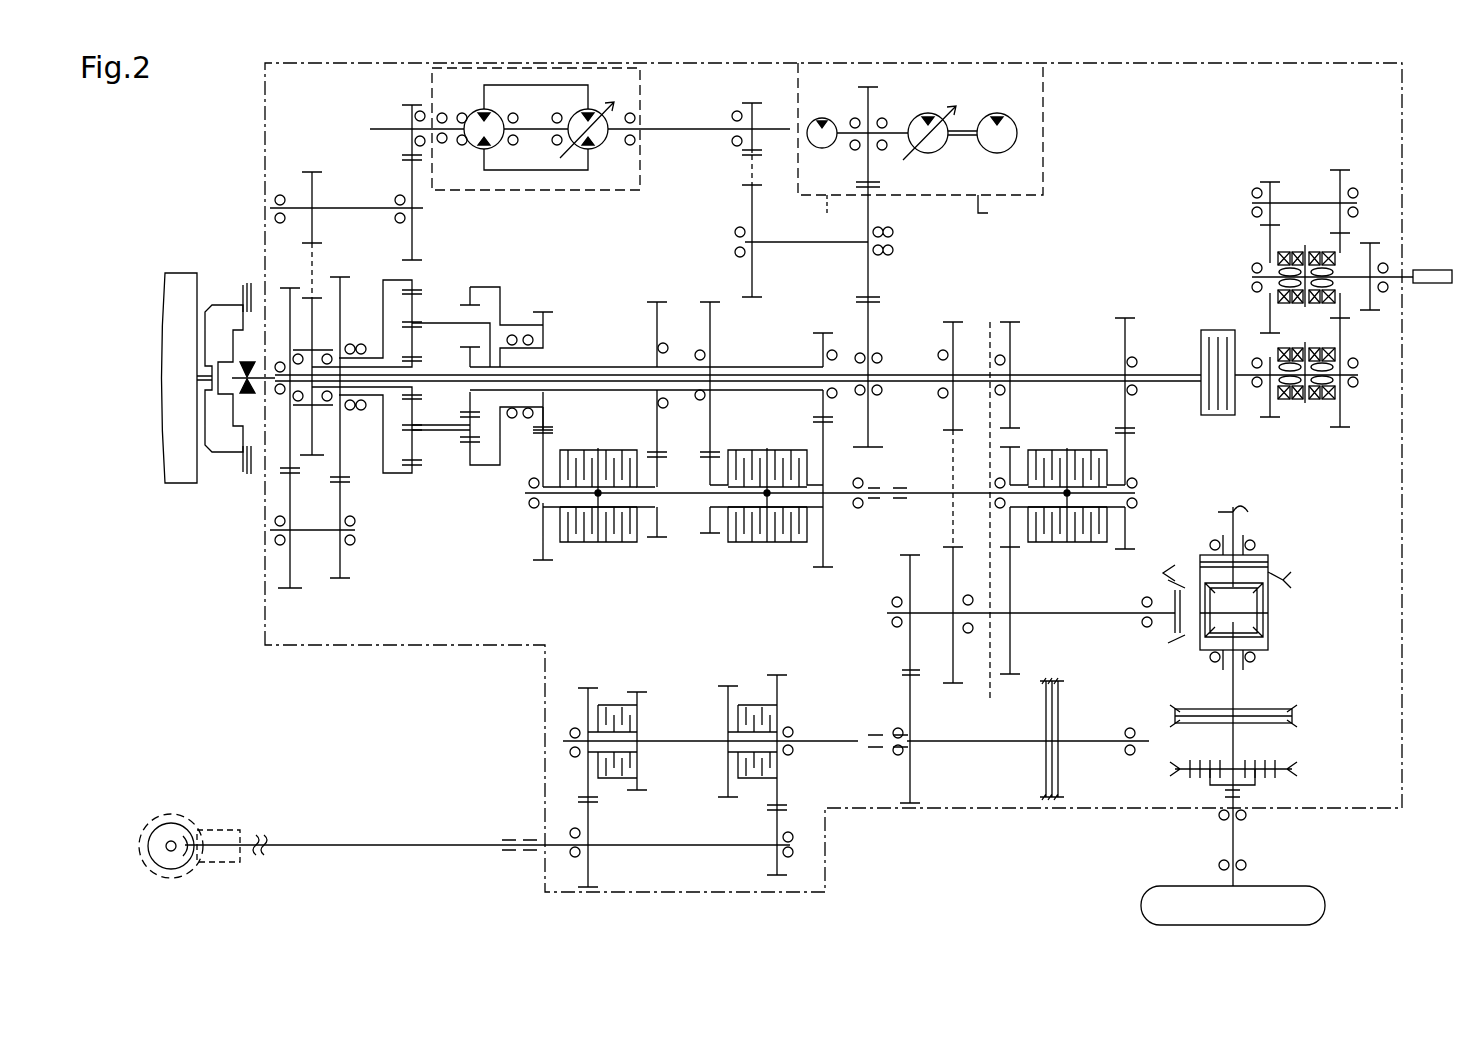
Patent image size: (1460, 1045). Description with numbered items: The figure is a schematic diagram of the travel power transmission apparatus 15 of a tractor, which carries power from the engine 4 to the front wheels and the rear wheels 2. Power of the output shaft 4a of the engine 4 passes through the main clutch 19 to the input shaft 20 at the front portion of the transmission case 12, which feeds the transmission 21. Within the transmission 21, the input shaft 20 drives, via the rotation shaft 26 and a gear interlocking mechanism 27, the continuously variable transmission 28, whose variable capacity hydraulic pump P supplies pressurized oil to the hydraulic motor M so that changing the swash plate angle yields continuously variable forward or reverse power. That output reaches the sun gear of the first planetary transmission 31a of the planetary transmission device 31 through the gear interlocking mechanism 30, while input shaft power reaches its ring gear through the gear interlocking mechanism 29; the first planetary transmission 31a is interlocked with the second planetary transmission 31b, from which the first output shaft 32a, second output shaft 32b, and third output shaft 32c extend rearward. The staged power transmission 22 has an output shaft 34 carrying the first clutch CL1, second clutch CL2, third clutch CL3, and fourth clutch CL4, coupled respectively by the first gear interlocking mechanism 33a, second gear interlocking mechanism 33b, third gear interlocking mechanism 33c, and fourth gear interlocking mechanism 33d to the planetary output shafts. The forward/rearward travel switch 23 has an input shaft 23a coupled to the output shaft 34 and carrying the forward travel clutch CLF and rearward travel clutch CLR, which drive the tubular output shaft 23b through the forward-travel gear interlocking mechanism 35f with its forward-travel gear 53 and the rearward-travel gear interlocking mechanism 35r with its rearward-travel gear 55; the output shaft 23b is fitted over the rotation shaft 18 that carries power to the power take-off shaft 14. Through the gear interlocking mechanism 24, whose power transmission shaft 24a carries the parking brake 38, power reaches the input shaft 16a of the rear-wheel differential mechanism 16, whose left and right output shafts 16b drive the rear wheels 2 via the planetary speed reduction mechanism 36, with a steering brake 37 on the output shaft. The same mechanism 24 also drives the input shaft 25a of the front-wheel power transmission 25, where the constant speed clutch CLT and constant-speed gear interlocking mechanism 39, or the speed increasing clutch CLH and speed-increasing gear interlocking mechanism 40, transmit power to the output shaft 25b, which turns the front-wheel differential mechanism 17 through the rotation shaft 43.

The rear wheels 2 is at (1325, 905).
The engine 4 is at (178, 483).
The output shaft 4a is at (197, 378).
The transmission case 12 is at (265, 78).
The power take-off shaft 14 is at (1432, 270).
The travel power transmission apparatus 15 is at (214, 180).
The rear-wheel differential mechanism 16 is at (1310, 600).
The input shaft 16a is at (1100, 613).
The output shafts 16b is at (1233, 708).
The front-wheel differential mechanism 17 is at (176, 822).
The rotation shaft 18 is at (1201, 360).
The main clutch 19 is at (225, 305).
The input shaft 20 is at (268, 372).
The transmission 21 is at (436, 573).
The staged power transmission 22 is at (707, 598).
The forward/rearward travel switch 23 is at (1100, 277).
The input shaft 23a is at (915, 493).
The output shaft 23b is at (980, 350).
The gear interlocking mechanism 24 is at (916, 329).
The power transmission shaft 24a is at (1000, 745).
The front-wheel power transmission 25 is at (672, 665).
The input shaft 25a is at (815, 741).
The output shaft 25b is at (700, 850).
The rotation shaft 26 is at (765, 365).
The gear interlocking mechanism 27 is at (799, 227).
The continuously variable transmission 28 is at (640, 80).
The gear interlocking mechanism 29 is at (275, 585).
The gear interlocking mechanism 30 is at (328, 140).
The planetary transmission device 31 is at (505, 256).
The first planetary transmission 31a is at (402, 496).
The second planetary transmission 31b is at (495, 487).
The first output shaft 32a is at (510, 350).
The second output shaft 32b is at (616, 362).
The third output shaft 32c is at (790, 385).
The first gear interlocking mechanism 33a is at (543, 560).
The second gear interlocking mechanism 33b is at (836, 538).
The third gear interlocking mechanism 33c is at (720, 335).
The fourth gear interlocking mechanism 33d is at (709, 555).
The output shaft 34 is at (855, 522).
The rearward-travel gear interlocking mechanism 35r is at (1035, 290).
The forward-travel gear interlocking mechanism 35f is at (1150, 298).
The planetary speed reduction mechanism 36 is at (1292, 768).
The steering brake 37 is at (1292, 710).
The parking brake 38 is at (1058, 750).
The constant-speed gear interlocking mechanism 39 is at (548, 795).
The speed-increasing gear interlocking mechanism 40 is at (835, 806).
The rotation shaft 43 is at (355, 845).
The forward-travel gear 53 is at (1128, 455).
The rearward-travel gear 55 is at (1030, 510).
The hydraulic motor M is at (472, 118).
The variable capacity hydraulic pump P is at (600, 145).
The first clutch CL1 is at (574, 545).
The second clutch CL2 is at (795, 545).
The third clutch CL3 is at (626, 545).
The fourth clutch CL4 is at (745, 545).
The rearward travel clutch CLR is at (1066, 445).
The forward travel clutch CLF is at (1090, 545).
The speed increasing clutch CLH is at (750, 715).
The constant speed clutch CLT is at (620, 778).